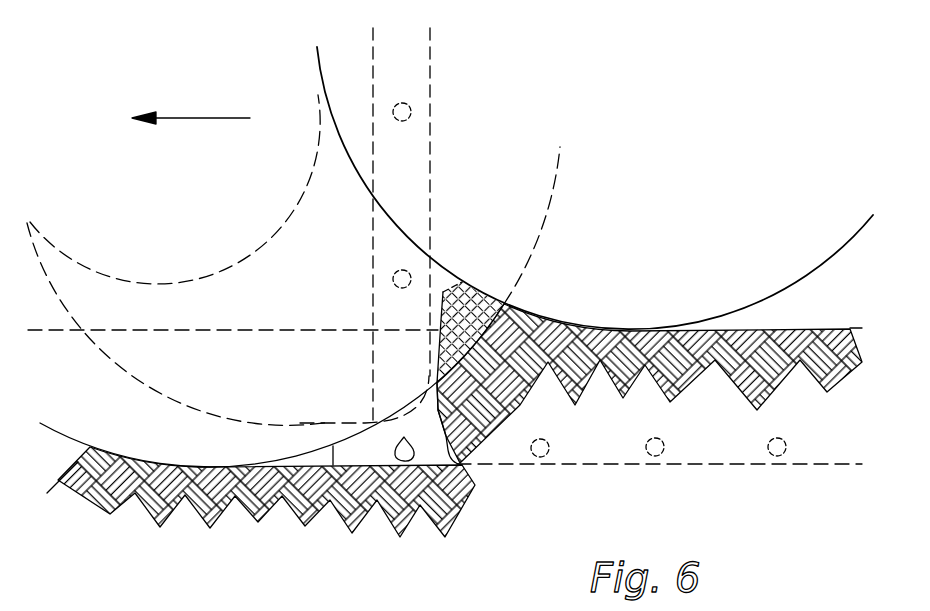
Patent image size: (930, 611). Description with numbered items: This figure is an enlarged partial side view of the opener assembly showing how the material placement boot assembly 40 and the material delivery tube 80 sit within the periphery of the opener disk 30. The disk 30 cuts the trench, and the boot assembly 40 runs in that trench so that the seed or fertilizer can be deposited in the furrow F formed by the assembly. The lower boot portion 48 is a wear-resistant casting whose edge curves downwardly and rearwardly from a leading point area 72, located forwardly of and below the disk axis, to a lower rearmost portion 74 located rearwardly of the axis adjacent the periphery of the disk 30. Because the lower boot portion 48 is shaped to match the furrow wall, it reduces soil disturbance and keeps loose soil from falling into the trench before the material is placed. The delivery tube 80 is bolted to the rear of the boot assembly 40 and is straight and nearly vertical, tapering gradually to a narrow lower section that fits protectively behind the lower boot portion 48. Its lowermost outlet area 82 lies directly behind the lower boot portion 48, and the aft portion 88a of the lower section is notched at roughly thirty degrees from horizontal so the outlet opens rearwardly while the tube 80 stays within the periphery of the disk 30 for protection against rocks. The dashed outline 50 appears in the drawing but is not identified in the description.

The opener disk 30 is at (312, 506).
The material placement boot assembly 40 is at (139, 383).
The lower boot portion 48 is at (215, 418).
The cutter 50 is at (224, 268).
The leading point area 72 is at (34, 218).
The lower rearmost portion 74 is at (364, 418).
The material delivery tube 80 is at (412, 98).
The lowermost outlet area 82 is at (383, 360).
The aft portion of the lower section 88a is at (370, 417).
The furrow F is at (366, 450).